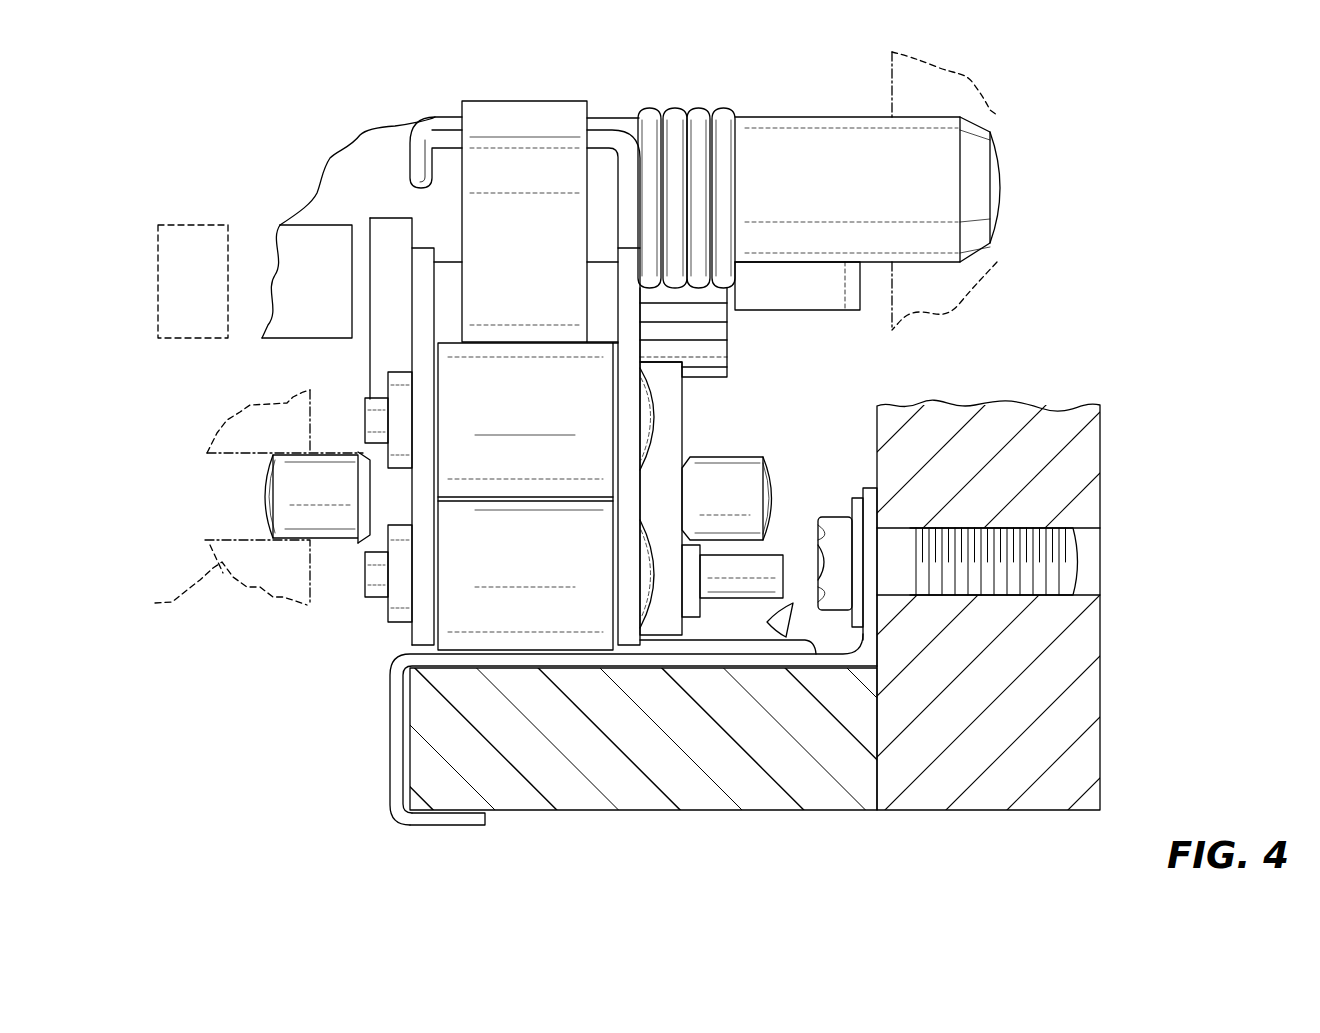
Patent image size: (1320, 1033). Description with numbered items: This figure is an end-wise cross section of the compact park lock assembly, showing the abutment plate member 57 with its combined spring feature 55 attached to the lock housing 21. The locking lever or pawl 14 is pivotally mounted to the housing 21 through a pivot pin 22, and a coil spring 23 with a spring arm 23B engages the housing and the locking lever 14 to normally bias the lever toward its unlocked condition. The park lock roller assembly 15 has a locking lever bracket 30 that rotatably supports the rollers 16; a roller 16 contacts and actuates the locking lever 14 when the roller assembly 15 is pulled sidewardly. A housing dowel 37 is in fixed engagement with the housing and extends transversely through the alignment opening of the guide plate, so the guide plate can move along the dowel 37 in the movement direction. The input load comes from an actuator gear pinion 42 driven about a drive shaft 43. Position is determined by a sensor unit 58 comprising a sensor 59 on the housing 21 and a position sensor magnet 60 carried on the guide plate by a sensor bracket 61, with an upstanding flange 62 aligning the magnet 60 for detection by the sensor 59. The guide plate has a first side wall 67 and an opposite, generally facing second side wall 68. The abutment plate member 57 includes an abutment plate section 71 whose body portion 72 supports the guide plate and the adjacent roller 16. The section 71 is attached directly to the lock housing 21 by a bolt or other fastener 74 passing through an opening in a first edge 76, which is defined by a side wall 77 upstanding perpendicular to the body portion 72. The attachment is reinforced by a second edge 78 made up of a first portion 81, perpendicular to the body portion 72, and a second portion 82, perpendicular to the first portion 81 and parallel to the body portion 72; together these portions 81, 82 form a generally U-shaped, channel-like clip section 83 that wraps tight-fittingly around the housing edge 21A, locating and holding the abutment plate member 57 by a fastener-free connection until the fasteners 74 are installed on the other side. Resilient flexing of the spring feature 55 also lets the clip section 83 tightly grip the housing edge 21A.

The locking lever 14 is at (566, 108).
The park lock roller assembly 15 is at (645, 655).
The roller 16 is at (508, 365).
The lock housing 21 is at (920, 77).
The housing edge 21A is at (415, 715).
The pivot pin 22 is at (940, 125).
The coil spring 23 is at (733, 132).
The spring arm 23B is at (432, 138).
The locking lever bracket 30 is at (410, 504).
The housing dowel 37 is at (730, 470).
The actuator gear pinion 42 is at (713, 330).
The drive shaft 43 is at (820, 298).
The combined spring feature 55 is at (382, 800).
The abutment plate member 57 is at (381, 700).
The sensor unit 58 is at (214, 197).
The sensor 59 is at (172, 262).
The position sensor magnet 60 is at (333, 242).
The sensor bracket 61 is at (362, 290).
The upstanding flange 62 is at (392, 223).
The first side wall 67 is at (397, 390).
The second side wall 68 is at (682, 402).
The abutment plate section 71 is at (508, 678).
The body portion 72 is at (698, 660).
The fastener 74 is at (1070, 570).
The first edge 76 is at (866, 490).
The side wall 77 is at (872, 610).
The second edge 78 is at (380, 678).
The first portion 81 is at (394, 760).
The second portion 82 is at (450, 822).
The clip section 83 is at (393, 830).